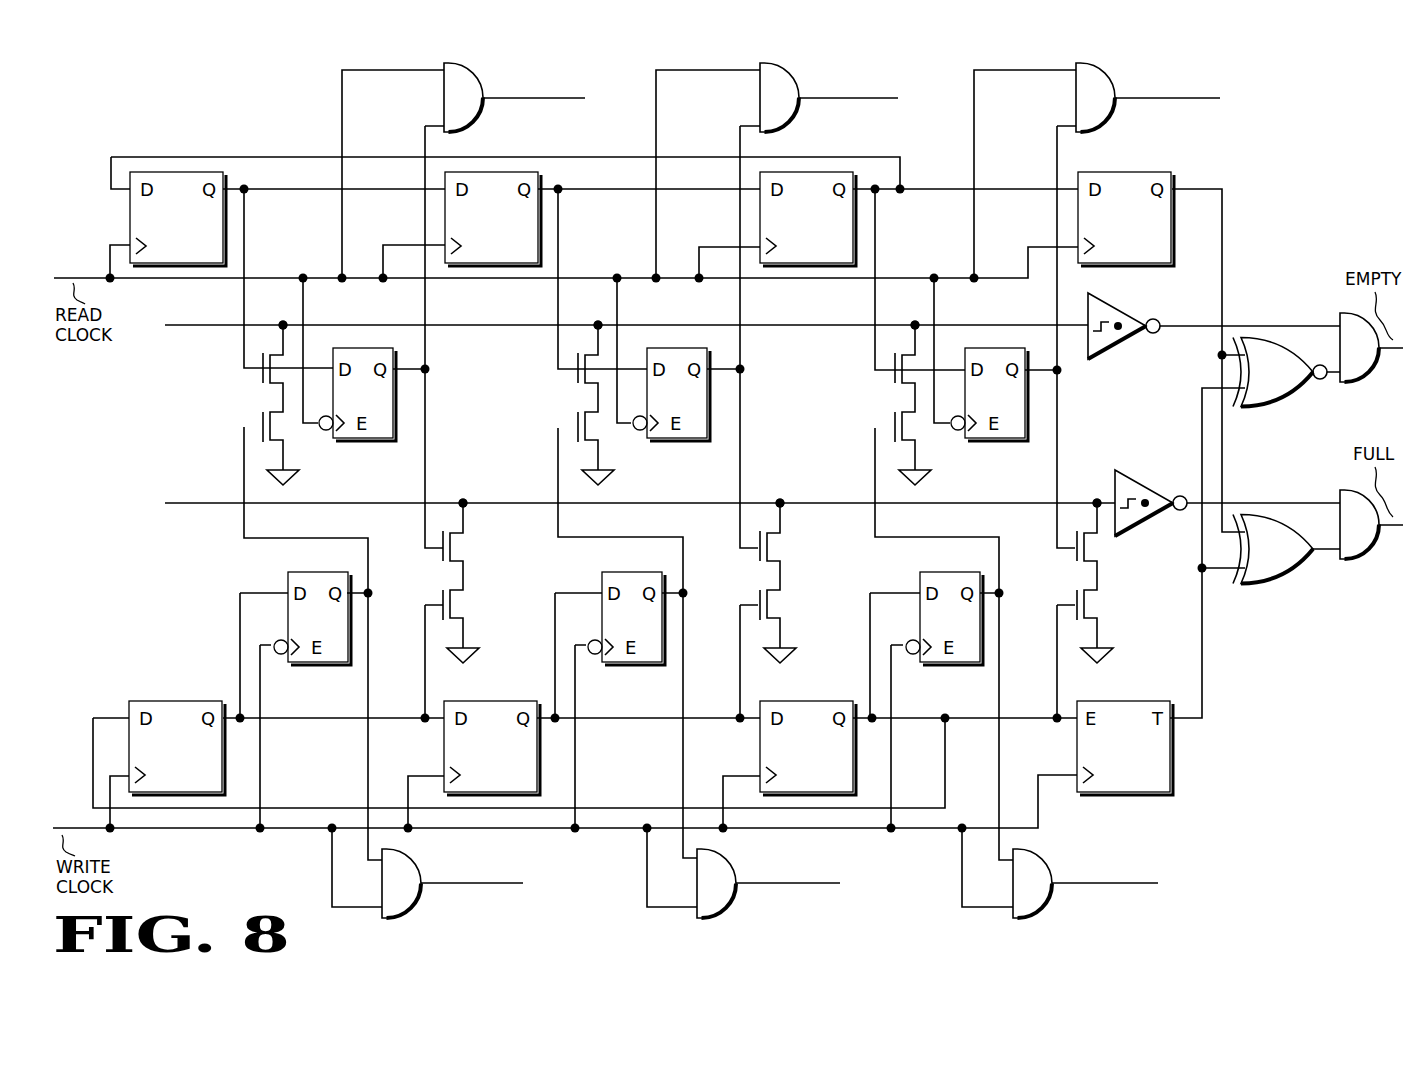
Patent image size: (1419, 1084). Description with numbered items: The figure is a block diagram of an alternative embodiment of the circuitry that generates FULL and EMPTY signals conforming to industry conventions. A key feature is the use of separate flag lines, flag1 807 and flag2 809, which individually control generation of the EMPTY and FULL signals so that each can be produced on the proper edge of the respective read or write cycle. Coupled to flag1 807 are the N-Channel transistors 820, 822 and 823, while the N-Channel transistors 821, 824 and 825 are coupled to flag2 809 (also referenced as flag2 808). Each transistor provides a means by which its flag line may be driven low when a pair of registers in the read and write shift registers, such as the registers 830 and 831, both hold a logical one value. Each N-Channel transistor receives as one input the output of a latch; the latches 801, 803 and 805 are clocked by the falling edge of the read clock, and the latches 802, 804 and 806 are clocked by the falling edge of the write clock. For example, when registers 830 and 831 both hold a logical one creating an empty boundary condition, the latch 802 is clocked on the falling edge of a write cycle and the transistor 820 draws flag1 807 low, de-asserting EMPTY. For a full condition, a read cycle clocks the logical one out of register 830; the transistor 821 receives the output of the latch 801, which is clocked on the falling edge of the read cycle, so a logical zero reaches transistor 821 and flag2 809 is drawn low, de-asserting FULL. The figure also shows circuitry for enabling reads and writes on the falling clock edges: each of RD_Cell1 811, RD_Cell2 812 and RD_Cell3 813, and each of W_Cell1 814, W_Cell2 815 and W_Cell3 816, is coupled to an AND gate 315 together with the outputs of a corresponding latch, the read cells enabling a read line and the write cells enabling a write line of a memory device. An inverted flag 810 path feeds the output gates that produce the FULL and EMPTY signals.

The AND gate 315 is at (801, 498).
The latch 801 is at (357, 394).
The latch 802 is at (312, 618).
The latch 803 is at (671, 394).
The latch 804 is at (626, 618).
The latch 805 is at (989, 394).
The latch 806 is at (944, 618).
The flag1 807 is at (626, 347).
The flag2 808 is at (1214, 296).
The flag2 809 is at (640, 524).
The inverted FLAG 2 inverter 810 is at (1227, 479).
The RD_Cell1 811 is at (514, 105).
The RD_Cell2 812 is at (829, 105).
The RD_Cell3 813 is at (1148, 105).
The W_Cell1 814 is at (452, 891).
The W_Cell2 815 is at (768, 891).
The W_Cell3 816 is at (1085, 891).
The N-Channel transistor 820 is at (262, 409).
The N-Channel transistor 821 is at (444, 586).
The N-Channel transistor 822 is at (574, 409).
The N-Channel transistor 823 is at (892, 409).
The N-Channel transistor 824 is at (759, 586).
The N-Channel transistor 825 is at (1074, 586).
The register 830 is at (215, 254).
The register 831 is at (213, 787).